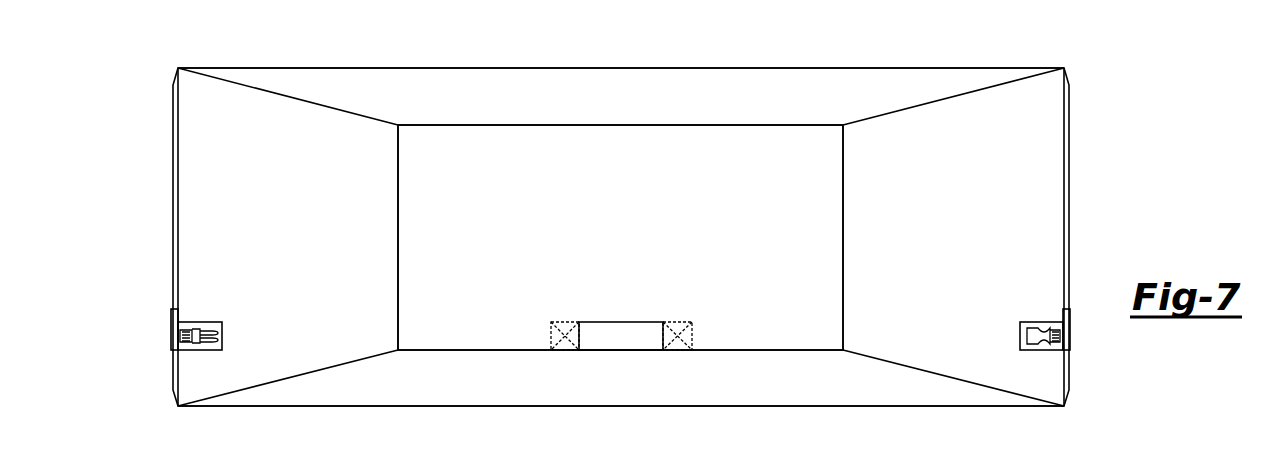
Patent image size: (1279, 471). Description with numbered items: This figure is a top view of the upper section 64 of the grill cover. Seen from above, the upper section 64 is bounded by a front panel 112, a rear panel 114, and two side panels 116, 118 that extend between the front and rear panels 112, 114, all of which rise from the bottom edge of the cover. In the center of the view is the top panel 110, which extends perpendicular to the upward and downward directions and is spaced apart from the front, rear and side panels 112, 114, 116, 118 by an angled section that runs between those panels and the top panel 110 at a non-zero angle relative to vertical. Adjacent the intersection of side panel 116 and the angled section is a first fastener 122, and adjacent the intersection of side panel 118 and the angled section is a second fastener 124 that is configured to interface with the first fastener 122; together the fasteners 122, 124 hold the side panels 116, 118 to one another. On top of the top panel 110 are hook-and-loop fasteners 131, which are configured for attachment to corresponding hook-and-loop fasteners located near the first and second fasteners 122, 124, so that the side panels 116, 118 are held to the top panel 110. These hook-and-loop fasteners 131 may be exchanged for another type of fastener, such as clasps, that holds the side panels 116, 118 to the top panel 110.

The upper section 64 is at (1128, 130).
The top panel 110 is at (638, 242).
The front panel 112 is at (757, 406).
The rear panel 114 is at (770, 68).
The side panel 116 is at (173, 200).
The side panel 118 is at (1064, 198).
The first fastener 122 is at (214, 316).
The second fastener 124 is at (1026, 316).
The hook-and-loop fasteners 131 is at (617, 332).